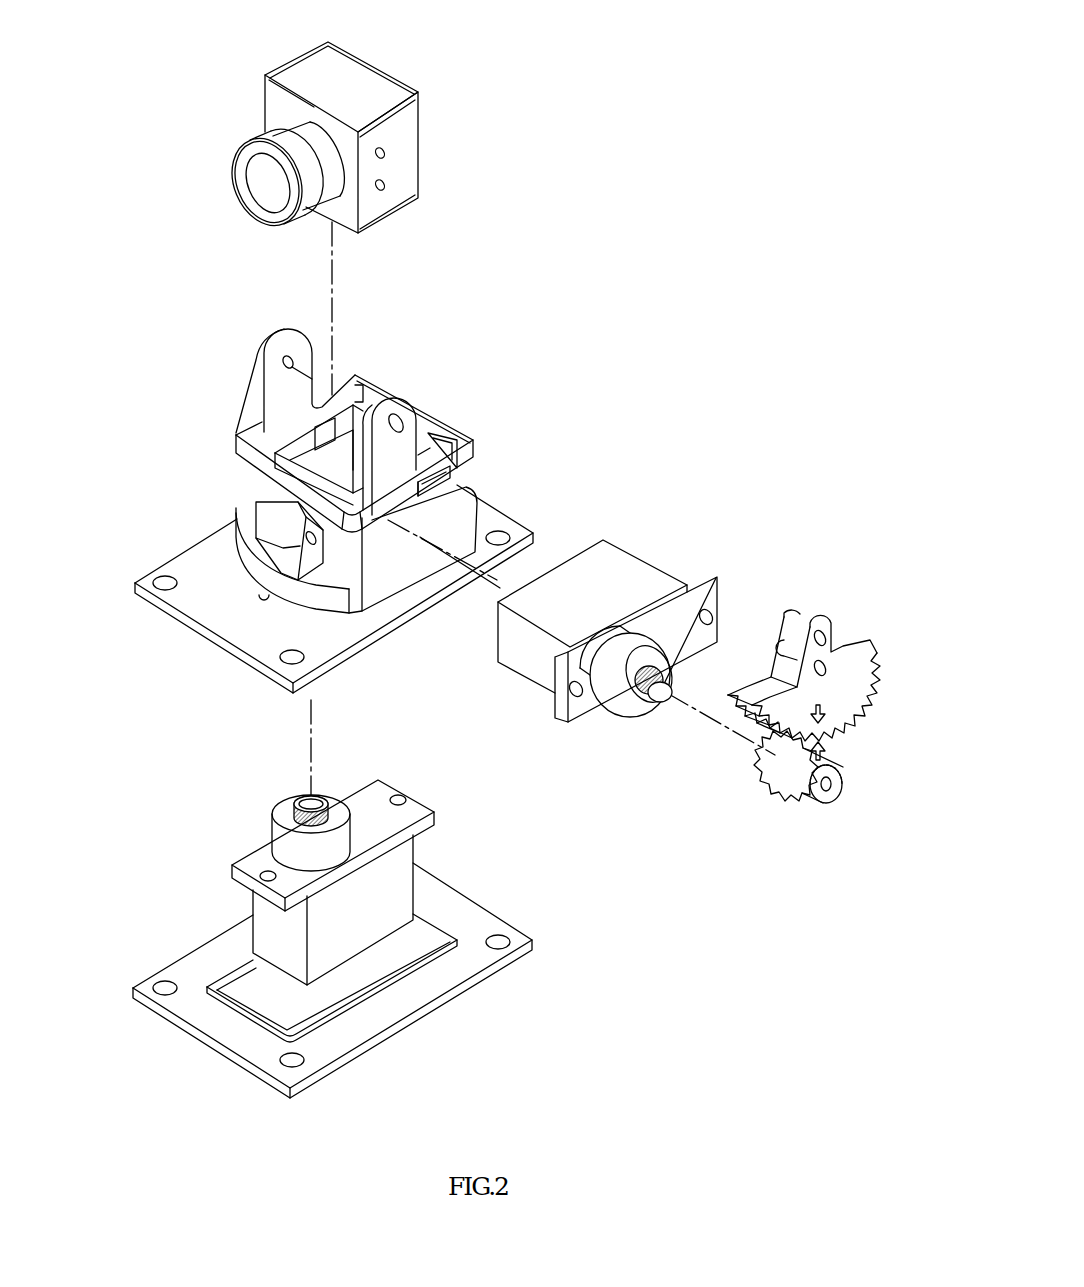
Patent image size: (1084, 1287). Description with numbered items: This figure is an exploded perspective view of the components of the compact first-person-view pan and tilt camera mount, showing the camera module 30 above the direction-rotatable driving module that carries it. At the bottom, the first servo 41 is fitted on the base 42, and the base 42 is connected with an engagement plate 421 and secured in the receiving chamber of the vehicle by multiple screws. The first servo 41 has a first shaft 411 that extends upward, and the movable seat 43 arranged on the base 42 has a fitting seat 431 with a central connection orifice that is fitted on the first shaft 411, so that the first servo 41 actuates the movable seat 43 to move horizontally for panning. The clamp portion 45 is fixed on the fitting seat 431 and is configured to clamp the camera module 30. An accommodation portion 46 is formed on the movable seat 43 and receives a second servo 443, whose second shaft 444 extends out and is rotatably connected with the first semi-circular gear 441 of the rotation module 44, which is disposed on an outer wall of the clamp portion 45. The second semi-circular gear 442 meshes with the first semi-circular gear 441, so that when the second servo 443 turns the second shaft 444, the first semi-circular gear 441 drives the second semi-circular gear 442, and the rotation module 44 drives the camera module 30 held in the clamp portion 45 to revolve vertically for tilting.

The camera module 30 is at (420, 146).
The first servo 41 is at (257, 858).
The first shaft 411 is at (299, 798).
The base 42 is at (175, 565).
The engagement plate 421 is at (172, 977).
The movable seat 43 is at (242, 483).
The fitting seat 431 is at (242, 518).
The rotation module 44 is at (853, 583).
The first semi-circular gear 441 is at (797, 803).
The second semi-circular gear 442 is at (850, 685).
The second servo 443 is at (583, 710).
The second shaft 444 is at (715, 577).
The clamp portion 45 is at (262, 347).
The accommodation portion 46 is at (376, 518).